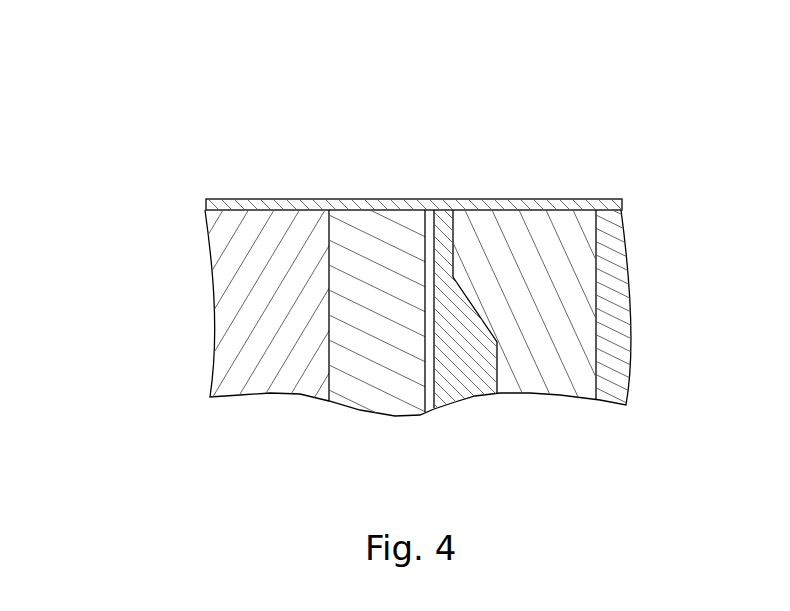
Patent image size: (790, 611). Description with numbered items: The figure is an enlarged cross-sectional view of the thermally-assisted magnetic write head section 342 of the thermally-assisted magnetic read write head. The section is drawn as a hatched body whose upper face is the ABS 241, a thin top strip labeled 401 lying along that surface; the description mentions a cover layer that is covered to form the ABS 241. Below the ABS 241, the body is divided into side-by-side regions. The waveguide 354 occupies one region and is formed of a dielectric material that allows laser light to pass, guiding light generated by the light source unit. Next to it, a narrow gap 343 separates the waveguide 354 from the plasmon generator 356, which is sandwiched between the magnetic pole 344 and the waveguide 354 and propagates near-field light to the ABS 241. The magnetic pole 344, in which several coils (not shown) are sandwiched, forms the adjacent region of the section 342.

The thermally-assisted magnetic write head section 342 is at (93, 48).
The ABS 241 is at (200, 196).
The top layer 401 is at (235, 205).
The waveguide 354 is at (352, 372).
The gap 343 is at (428, 403).
The plasmon generator 356 is at (464, 388).
The magnetic pole 344 is at (548, 382).